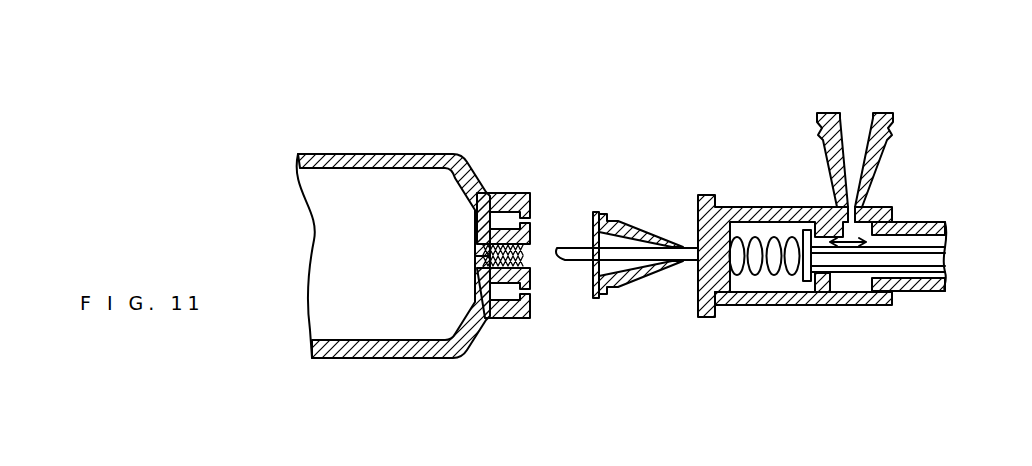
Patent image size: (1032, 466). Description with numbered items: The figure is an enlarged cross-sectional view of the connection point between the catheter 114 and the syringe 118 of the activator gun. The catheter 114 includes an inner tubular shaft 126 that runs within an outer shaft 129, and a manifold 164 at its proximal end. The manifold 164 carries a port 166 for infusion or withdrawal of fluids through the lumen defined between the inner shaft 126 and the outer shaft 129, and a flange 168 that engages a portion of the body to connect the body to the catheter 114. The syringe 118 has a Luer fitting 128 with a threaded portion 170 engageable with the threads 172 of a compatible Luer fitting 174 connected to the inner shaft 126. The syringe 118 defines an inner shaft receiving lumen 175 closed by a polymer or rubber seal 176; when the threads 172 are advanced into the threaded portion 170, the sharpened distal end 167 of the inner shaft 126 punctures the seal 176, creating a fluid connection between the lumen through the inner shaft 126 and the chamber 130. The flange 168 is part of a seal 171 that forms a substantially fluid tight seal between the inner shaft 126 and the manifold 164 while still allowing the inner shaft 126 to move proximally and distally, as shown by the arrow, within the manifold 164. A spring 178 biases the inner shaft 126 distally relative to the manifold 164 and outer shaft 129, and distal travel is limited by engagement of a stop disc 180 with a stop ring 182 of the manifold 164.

The catheter 114 is at (854, 202).
The syringe 118 is at (437, 153).
The inner tubular shaft 126 is at (687, 261).
The Luer fitting 128 is at (503, 193).
The outer shaft 129 is at (942, 291).
The chamber 130 is at (393, 202).
The manifold 164 is at (882, 207).
The port 166 is at (852, 113).
The sharpened distal end 167 is at (627, 231).
The flange 168 is at (705, 195).
The threaded portion 170 is at (497, 264).
The seal 171 is at (725, 305).
The threads 172 is at (610, 213).
The compatible Luer fitting 174 is at (645, 231).
The inner shaft receiving lumen 175 is at (492, 318).
The polymer or rubber seal 176 is at (600, 310).
The spring 178 is at (778, 280).
The stop disc 180 is at (806, 281).
The stop ring 182 is at (818, 207).